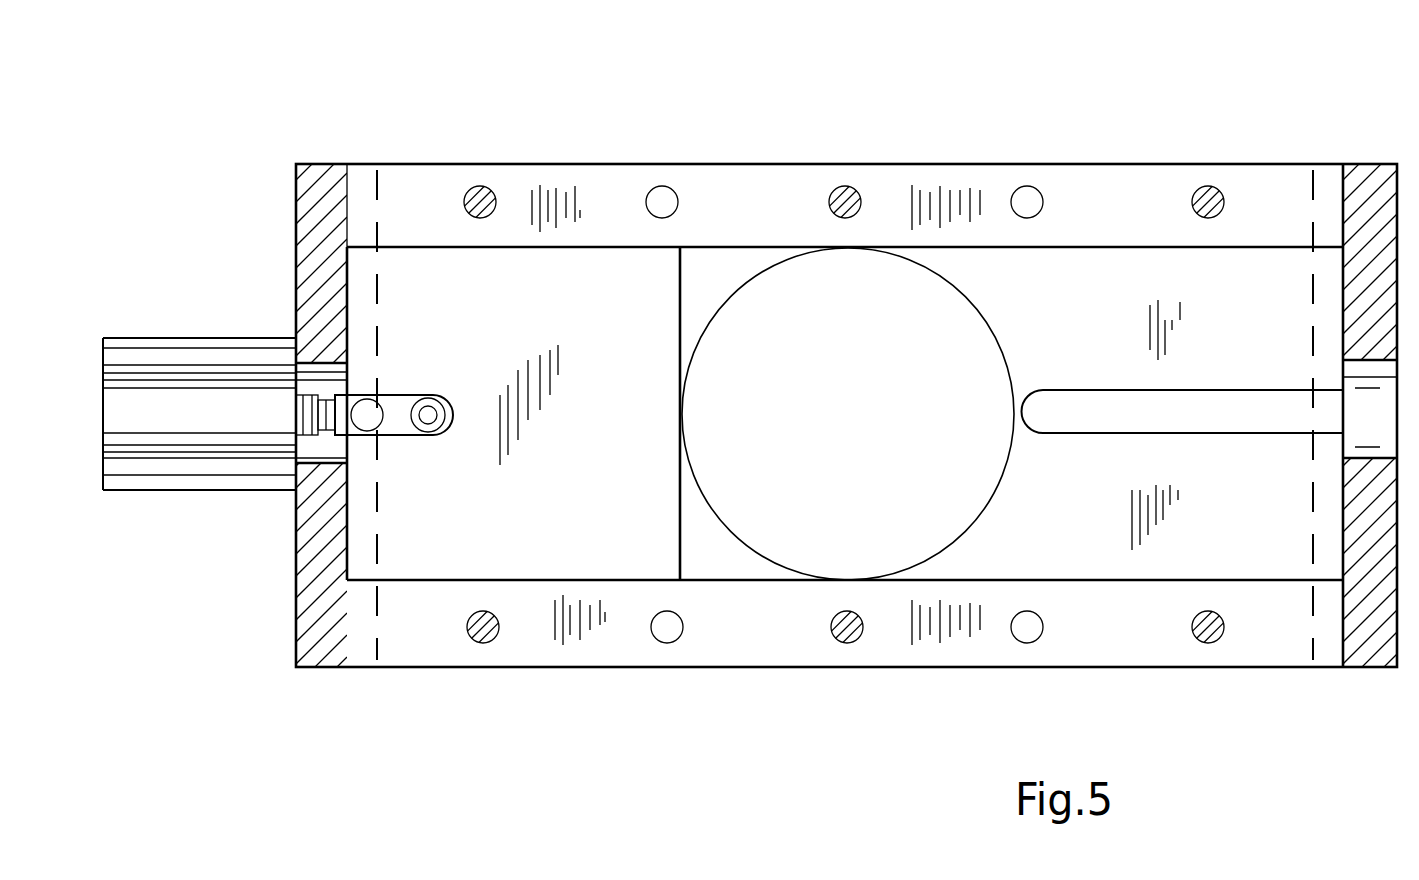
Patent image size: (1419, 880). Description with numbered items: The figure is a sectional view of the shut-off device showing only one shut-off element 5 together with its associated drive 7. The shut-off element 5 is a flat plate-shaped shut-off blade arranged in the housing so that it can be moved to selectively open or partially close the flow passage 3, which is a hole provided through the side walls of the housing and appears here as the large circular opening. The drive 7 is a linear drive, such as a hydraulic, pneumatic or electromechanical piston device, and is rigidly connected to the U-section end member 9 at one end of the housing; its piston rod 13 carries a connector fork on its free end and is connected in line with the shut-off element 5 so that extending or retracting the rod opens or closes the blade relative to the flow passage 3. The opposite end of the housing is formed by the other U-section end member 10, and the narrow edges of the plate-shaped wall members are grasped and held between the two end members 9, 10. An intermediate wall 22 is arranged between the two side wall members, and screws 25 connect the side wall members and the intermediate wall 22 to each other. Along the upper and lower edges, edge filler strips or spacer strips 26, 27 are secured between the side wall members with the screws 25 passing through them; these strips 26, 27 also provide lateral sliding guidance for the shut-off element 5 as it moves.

The flow passage 3 is at (787, 315).
The shut-off element 5 is at (443, 547).
The drive 7 is at (168, 337).
The U-section end member 9 is at (308, 210).
The U-section end member 10 is at (1362, 190).
The piston rod 13 is at (308, 412).
The intermediate wall 22 is at (1102, 287).
The screws 25 is at (478, 190).
The edge filler strip 26 is at (575, 197).
The edge filler strip 27 is at (728, 615).